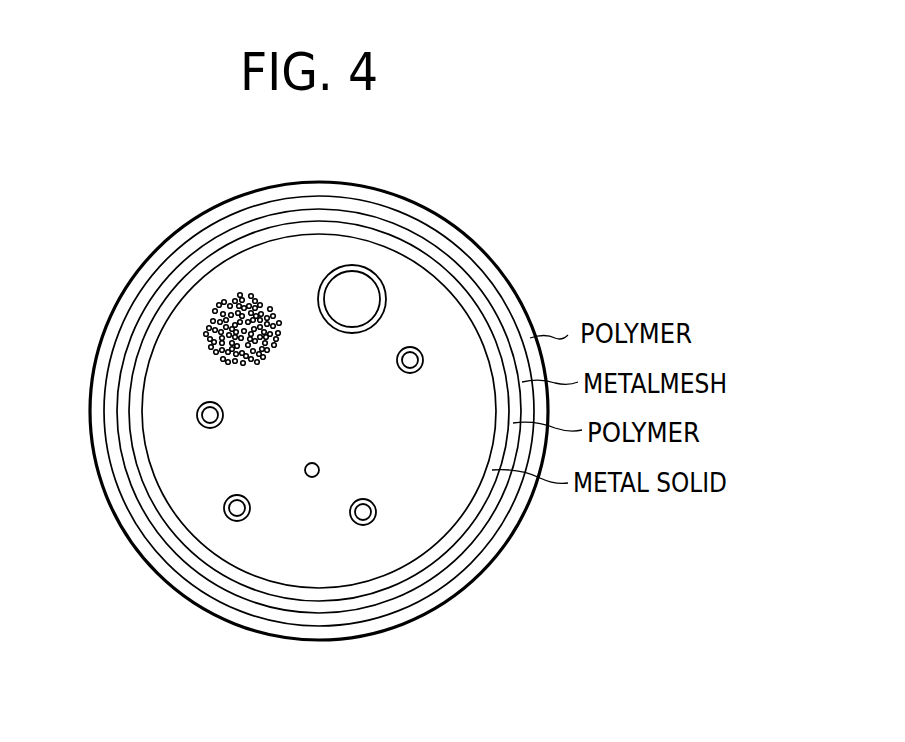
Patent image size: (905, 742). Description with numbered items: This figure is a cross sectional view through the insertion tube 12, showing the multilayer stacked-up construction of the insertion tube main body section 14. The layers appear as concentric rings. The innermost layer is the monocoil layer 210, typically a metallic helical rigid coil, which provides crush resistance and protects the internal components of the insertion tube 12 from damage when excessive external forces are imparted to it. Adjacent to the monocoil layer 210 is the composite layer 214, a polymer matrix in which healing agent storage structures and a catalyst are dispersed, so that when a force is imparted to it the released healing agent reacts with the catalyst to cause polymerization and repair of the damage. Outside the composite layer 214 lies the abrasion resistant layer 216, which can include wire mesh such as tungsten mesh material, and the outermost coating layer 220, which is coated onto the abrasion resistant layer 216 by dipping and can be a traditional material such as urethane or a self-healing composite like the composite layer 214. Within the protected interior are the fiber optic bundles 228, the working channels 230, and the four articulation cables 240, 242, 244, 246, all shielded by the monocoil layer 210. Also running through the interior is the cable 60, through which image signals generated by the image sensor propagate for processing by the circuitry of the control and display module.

The insertion tube 12 is at (303, 370).
The insertion tube main body section 14 is at (303, 370).
The cable 60 is at (318, 465).
The monocoil layer 210 is at (272, 587).
The composite layer 214 is at (215, 577).
The abrasion resistant layer 216 is at (167, 558).
The coating layer 220 is at (128, 528).
The fiber optic bundles 228 is at (260, 293).
The working channels 230 is at (367, 267).
The articulation cable 240 is at (418, 372).
The articulation cable 242 is at (365, 497).
The articulation cable 244 is at (245, 493).
The articulation cable 246 is at (222, 407).